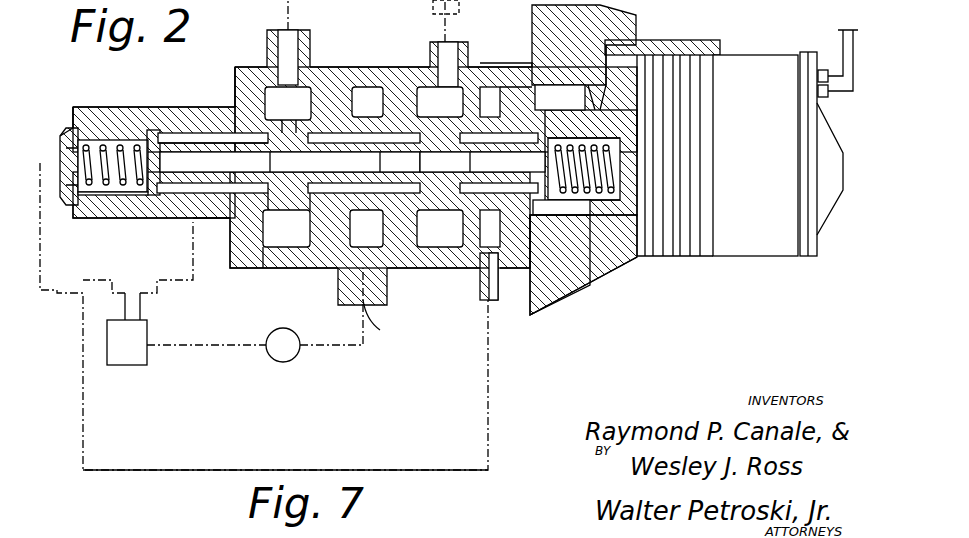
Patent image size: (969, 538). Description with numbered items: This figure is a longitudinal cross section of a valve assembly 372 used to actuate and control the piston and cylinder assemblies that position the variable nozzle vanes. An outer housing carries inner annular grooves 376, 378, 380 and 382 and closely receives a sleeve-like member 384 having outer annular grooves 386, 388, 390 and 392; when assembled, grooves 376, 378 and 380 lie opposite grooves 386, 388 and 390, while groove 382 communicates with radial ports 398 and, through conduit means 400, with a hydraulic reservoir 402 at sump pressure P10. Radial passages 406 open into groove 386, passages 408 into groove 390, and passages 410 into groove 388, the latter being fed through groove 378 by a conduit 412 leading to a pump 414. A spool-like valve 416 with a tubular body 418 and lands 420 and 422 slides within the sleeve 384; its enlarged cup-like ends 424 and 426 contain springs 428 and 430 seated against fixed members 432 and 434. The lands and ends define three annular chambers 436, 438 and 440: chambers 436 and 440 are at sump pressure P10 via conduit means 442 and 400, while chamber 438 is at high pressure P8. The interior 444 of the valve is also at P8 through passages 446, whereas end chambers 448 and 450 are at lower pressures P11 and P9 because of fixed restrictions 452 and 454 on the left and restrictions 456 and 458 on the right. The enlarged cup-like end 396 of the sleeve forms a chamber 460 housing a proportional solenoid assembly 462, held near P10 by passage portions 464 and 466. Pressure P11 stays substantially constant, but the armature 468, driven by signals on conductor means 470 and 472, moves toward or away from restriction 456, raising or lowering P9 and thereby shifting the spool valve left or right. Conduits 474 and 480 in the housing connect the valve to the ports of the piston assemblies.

The valve assembly 372 is at (645, 308).
The inner annular groove 376 is at (268, 70).
The inner annular groove 378 is at (410, 85).
The inner annular groove 380 is at (485, 85).
The inner annular groove 382 is at (500, 90).
The sleeve-like member 384 is at (290, 163).
The outer annular groove 386 is at (275, 248).
The outer annular groove 388 is at (345, 210).
The outer annular groove 390 is at (405, 275).
The outer annular groove 392 is at (563, 265).
The cup-like end 396 is at (670, 45).
The radially directed ports 398 is at (407, 164).
The conduit means 400 is at (130, 472).
The hydraulic sump or reservoir 402 is at (128, 350).
The radially directed ports or passages 406 is at (250, 100).
The radially directed ports or passages 408 is at (485, 250).
The ports or passages 410 is at (365, 105).
The conduit 412 is at (172, 350).
The pump 414 is at (280, 360).
The spool-like valve 416 is at (182, 132).
The tubular body 418 is at (80, 190).
The annular land 420 is at (288, 103).
The annular land 422 is at (438, 290).
The cup-like portion 424 is at (130, 142).
The cup-like portion 426 is at (600, 240).
The spring 428 is at (103, 142).
The spring 430 is at (595, 150).
The fixed member 432 is at (68, 116).
The fixed member 434 is at (640, 205).
The annular chamber 436 is at (172, 196).
The annular chamber 438 is at (298, 122).
The annular chamber 440 is at (540, 215).
The conduit means 442 is at (200, 220).
The interior of valve 444 is at (312, 160).
The passages 446 is at (384, 170).
The end chamber 448 is at (208, 136).
The end chamber 450 is at (580, 140).
The fixed restriction 452 is at (61, 150).
The fixed restriction 454 is at (150, 190).
The restriction 456 is at (605, 170).
The restriction 458 is at (560, 97).
The chamber 460 is at (690, 82).
The proportional solenoid assembly 462 is at (764, 265).
The passage portion 464 is at (545, 85).
The passage portion 466 is at (600, 85).
The armature 468 is at (652, 180).
The conductor means 470 is at (843, 50).
The conductor means 472 is at (855, 75).
The conduit 474 is at (305, 18).
The second conduit 480 is at (440, 40).
The high pressure P8 is at (381, 330).
The variable end pressure P9 is at (600, 105).
The sump pressure P10 is at (645, 238).
The left end chamber pressure P11 is at (104, 195).